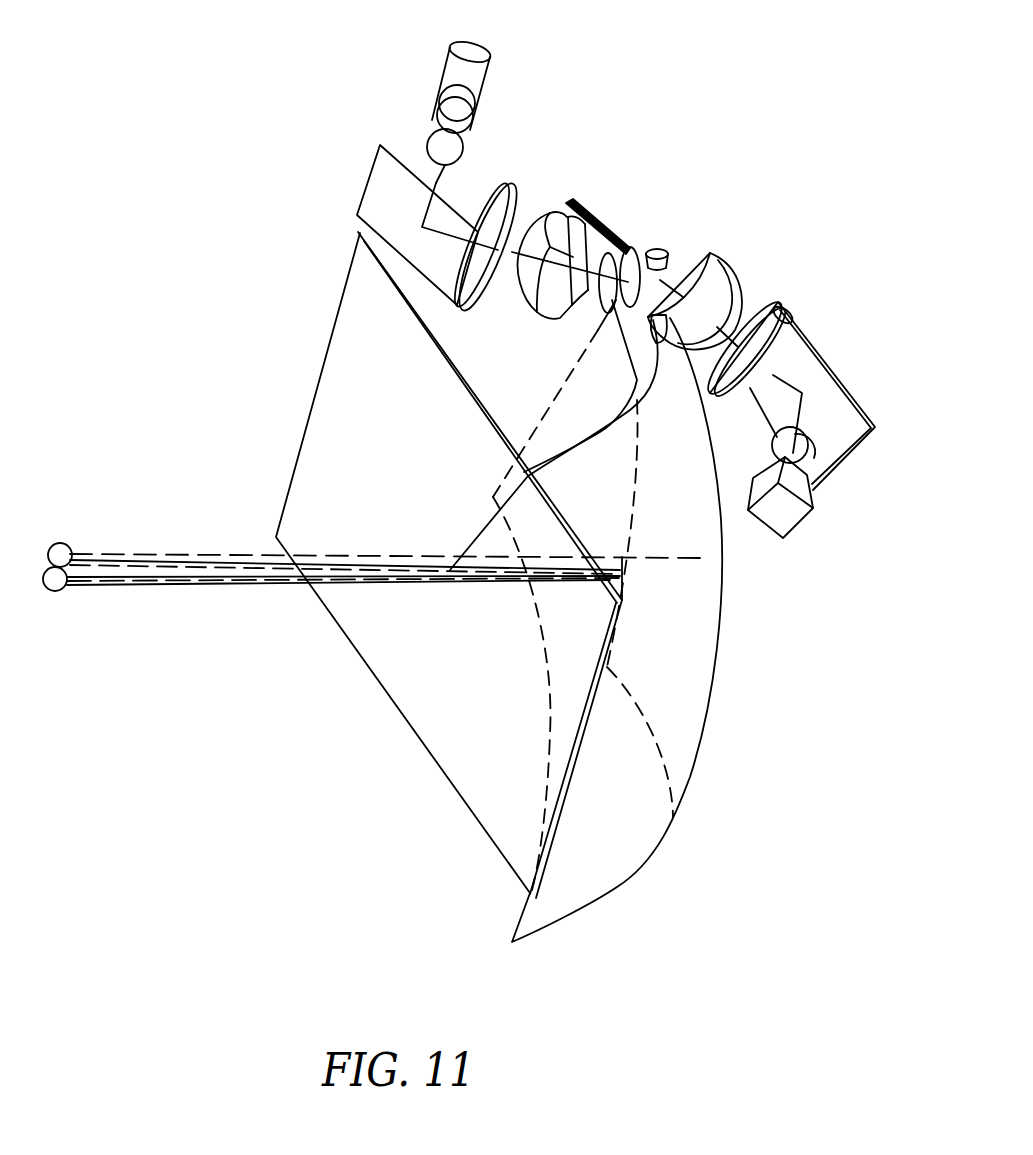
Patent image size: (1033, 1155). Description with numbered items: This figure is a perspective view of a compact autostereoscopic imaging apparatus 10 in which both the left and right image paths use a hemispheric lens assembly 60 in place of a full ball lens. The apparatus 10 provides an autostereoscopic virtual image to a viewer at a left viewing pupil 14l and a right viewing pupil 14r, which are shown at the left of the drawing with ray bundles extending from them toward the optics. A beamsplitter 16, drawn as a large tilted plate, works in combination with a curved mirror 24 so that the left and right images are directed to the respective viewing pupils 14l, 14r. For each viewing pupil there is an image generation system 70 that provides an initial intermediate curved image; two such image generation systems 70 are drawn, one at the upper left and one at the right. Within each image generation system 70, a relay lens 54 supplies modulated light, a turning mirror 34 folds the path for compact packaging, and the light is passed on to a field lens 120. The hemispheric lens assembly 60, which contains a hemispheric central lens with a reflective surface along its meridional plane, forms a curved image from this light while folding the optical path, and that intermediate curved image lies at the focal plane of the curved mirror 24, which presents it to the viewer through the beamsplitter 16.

The autostereoscopic imaging apparatus 10 is at (470, 485).
The left viewing pupil 14l is at (62, 543).
The right viewing pupil 14r is at (55, 591).
The beamsplitter 16 is at (399, 712).
The curved mirror 24 is at (623, 873).
The turning mirror 34 is at (375, 182).
The relay lens 54 is at (478, 68).
The hemispheric lens assembly 60 is at (617, 228).
The image generation system 70 is at (581, 311).
The field lens 120 is at (598, 200).